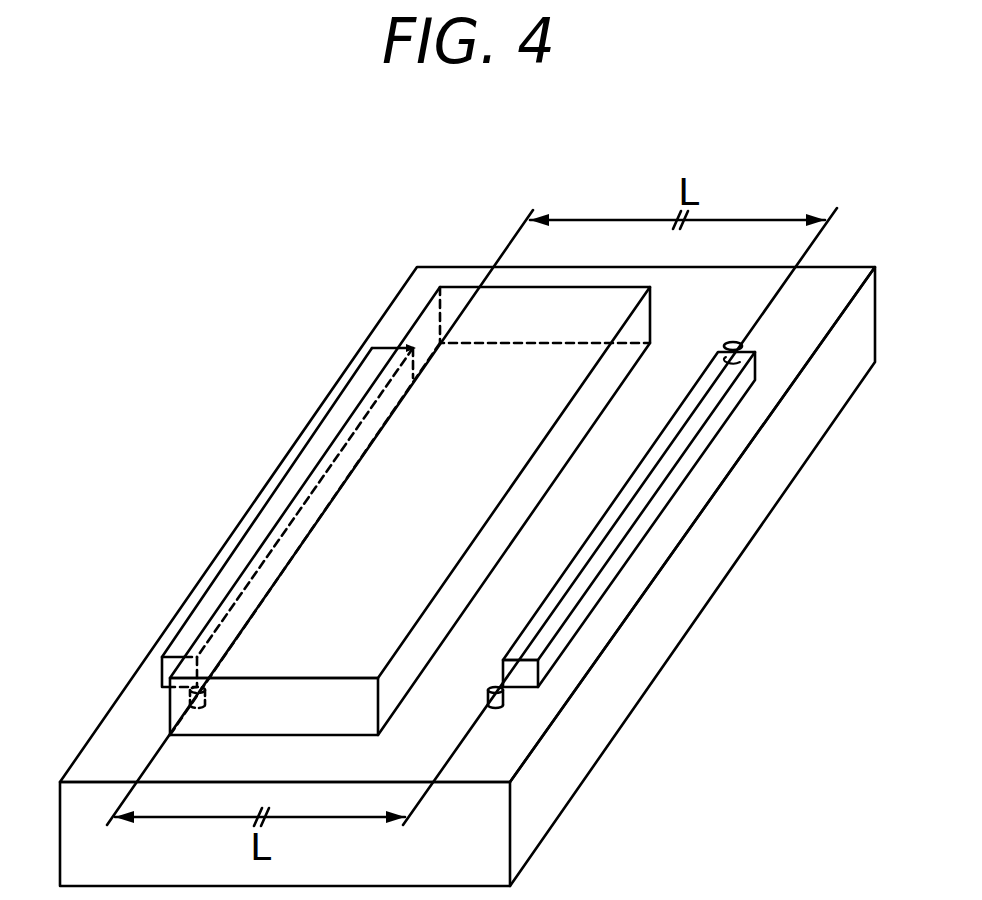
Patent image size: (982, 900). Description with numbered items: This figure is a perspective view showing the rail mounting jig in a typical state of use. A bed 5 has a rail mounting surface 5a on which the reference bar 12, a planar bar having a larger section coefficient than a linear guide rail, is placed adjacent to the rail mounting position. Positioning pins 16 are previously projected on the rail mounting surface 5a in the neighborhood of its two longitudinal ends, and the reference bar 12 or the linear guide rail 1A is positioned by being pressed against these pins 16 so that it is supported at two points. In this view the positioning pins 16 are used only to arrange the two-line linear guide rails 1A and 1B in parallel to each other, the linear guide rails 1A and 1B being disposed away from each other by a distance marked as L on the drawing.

The bed 5 is at (528, 817).
The rail mounting surface 5a is at (495, 747).
The reference bar 12 is at (473, 360).
The linear guide rail 1B is at (338, 412).
The linear guide rail 1A is at (553, 610).
The positioning pins 16 is at (170, 697).